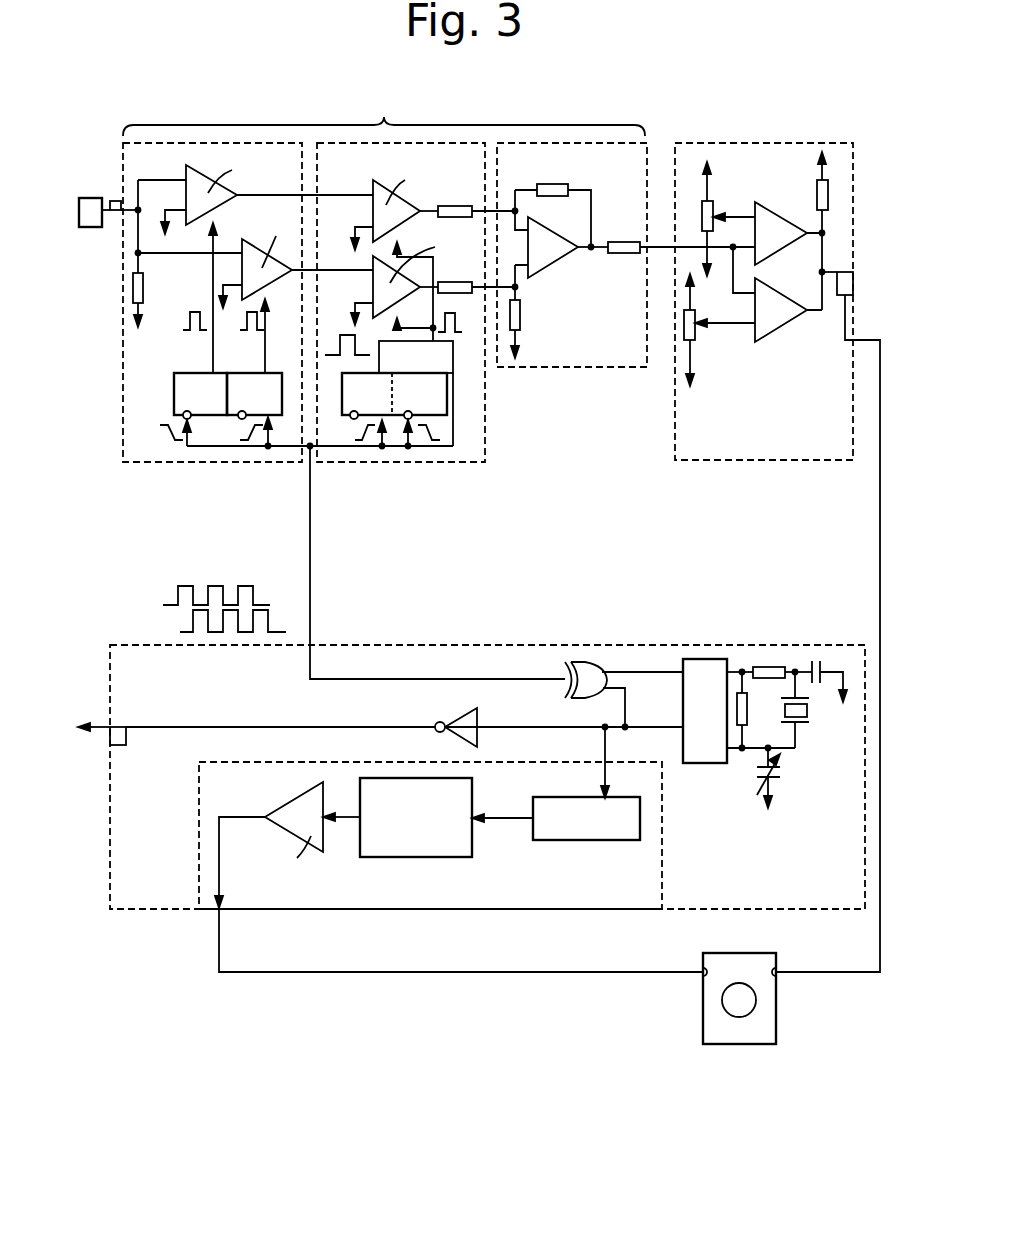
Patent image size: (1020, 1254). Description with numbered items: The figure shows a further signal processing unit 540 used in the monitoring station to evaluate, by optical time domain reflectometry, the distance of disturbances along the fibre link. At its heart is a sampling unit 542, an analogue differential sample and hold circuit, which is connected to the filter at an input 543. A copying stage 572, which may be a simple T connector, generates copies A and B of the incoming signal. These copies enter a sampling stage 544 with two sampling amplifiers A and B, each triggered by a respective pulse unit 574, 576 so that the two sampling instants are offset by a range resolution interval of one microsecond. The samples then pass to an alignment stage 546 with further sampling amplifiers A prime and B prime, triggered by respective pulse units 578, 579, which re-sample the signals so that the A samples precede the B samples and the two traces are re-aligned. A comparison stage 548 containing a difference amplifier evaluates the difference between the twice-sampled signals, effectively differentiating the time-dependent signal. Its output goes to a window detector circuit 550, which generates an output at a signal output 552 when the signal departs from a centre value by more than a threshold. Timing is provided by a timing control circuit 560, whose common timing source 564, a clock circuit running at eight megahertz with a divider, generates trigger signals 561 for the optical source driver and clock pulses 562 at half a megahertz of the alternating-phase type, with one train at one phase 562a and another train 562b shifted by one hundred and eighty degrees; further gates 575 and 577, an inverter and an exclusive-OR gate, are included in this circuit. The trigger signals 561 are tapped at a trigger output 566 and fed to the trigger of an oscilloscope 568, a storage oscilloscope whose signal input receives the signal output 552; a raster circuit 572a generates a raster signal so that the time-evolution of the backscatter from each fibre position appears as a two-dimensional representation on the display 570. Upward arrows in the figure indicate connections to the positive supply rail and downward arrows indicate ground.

The further signal processing unit 540 is at (540, 1003).
The sampling unit 542 is at (565, 283).
The input 543 is at (92, 228).
The sampling stage 544 is at (143, 462).
The alignment stage 546 is at (435, 462).
The comparison stage 548 is at (617, 367).
The window detector circuit 550 is at (745, 460).
The signal output 552 is at (855, 283).
The timing control circuit 560 is at (108, 828).
The trigger signals 561 is at (253, 727).
The clock pulses 562 is at (158, 618).
The one phase 562a is at (186, 585).
The other phase 562b is at (275, 619).
The common timing source 564 is at (705, 763).
The trigger output 566 is at (108, 727).
The oscilloscope 568 is at (710, 1030).
The display 570 is at (743, 1000).
The copying stage 572 is at (112, 200).
The raster circuit 572a is at (198, 885).
The pulse unit 574 is at (200, 385).
The gate 575 is at (460, 718).
The pulse unit 576 is at (250, 388).
The gate 577 is at (575, 690).
The pulse unit 578 is at (345, 397).
The pulse unit 579 is at (433, 396).